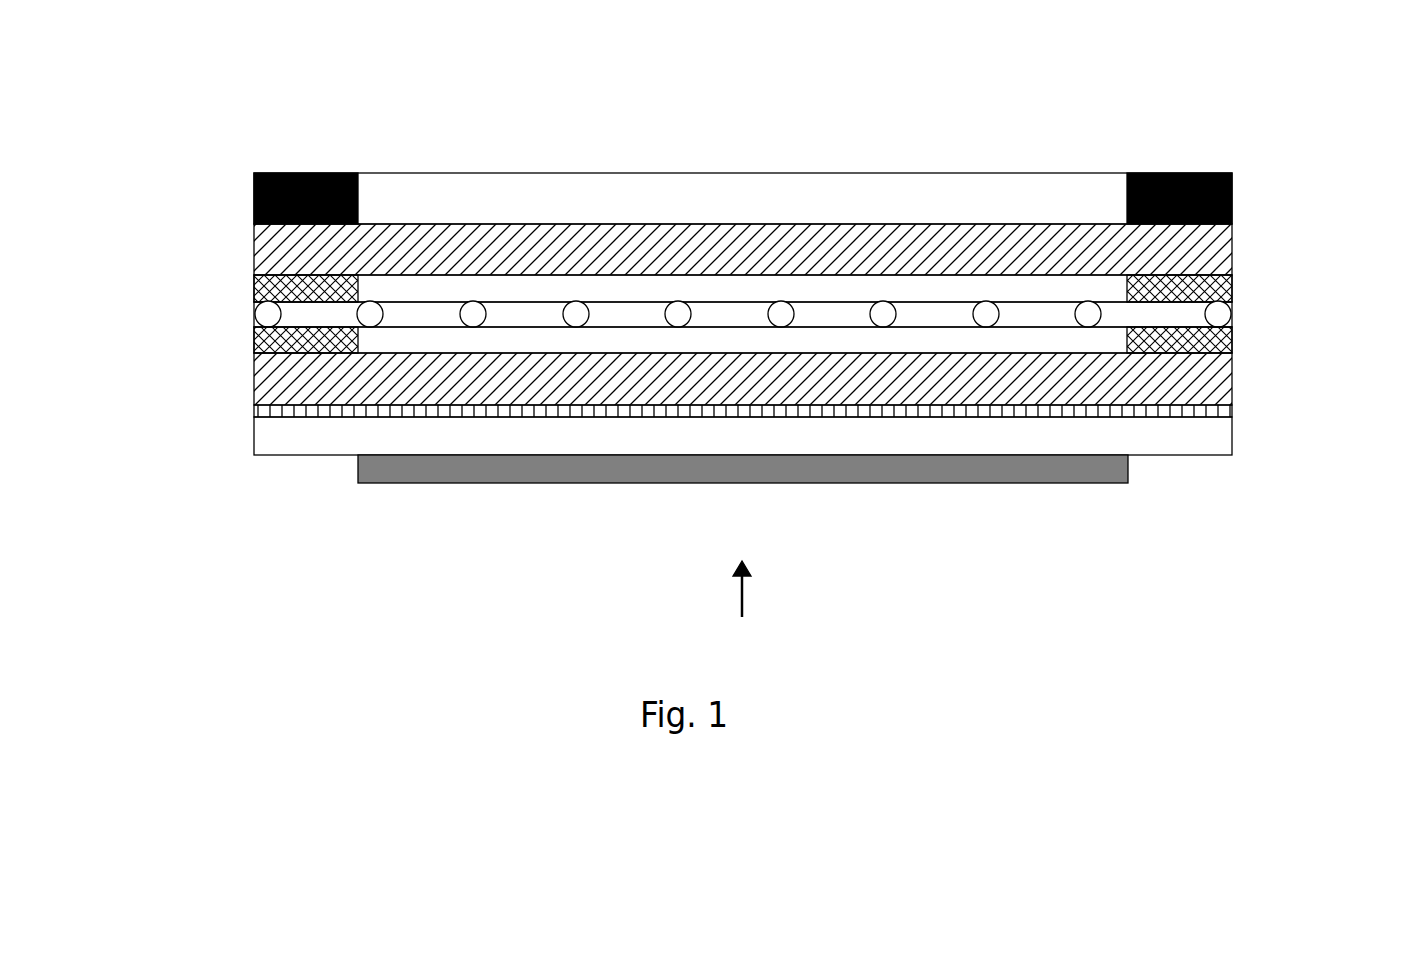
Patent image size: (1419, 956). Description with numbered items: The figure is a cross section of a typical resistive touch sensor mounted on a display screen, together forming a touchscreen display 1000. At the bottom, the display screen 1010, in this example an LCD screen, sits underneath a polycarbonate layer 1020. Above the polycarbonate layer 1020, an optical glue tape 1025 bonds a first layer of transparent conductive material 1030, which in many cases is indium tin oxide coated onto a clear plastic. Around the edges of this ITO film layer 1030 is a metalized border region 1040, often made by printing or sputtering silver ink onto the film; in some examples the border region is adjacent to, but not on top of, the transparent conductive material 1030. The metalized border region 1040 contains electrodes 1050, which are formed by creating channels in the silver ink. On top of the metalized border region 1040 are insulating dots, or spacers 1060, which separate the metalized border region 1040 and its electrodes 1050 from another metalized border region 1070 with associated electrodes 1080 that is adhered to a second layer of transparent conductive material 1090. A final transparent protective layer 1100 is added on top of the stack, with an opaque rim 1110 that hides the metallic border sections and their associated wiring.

The touchscreen display 1000 is at (744, 609).
The display screen 1010 is at (480, 482).
The polycarbonate layer 1020 is at (255, 453).
The optical glue tape 1025 is at (1232, 413).
The first layer of transparent conductive material 1030 is at (1232, 378).
The metalized border region 1040 is at (255, 343).
The electrodes 1050 is at (1232, 338).
The spacers 1060 is at (256, 318).
The metalized border region 1070 is at (254, 290).
The electrodes 1080 is at (1232, 281).
The second layer of transparent conductive material 1090 is at (1232, 243).
The transparent protective layer 1100 is at (751, 173).
The opaque rim 1110 is at (1174, 173).